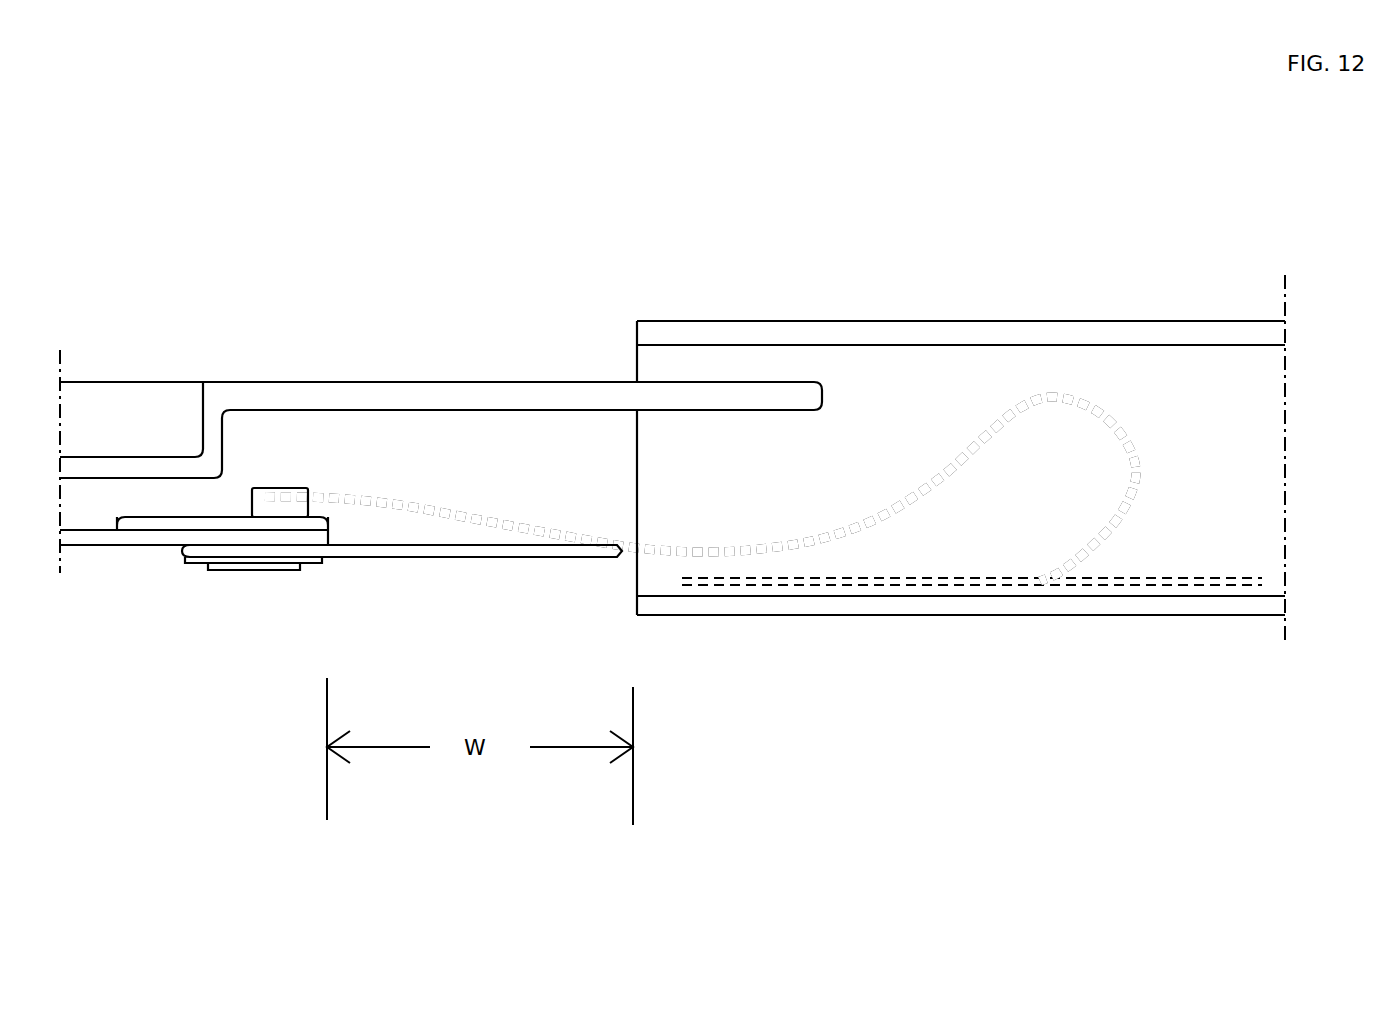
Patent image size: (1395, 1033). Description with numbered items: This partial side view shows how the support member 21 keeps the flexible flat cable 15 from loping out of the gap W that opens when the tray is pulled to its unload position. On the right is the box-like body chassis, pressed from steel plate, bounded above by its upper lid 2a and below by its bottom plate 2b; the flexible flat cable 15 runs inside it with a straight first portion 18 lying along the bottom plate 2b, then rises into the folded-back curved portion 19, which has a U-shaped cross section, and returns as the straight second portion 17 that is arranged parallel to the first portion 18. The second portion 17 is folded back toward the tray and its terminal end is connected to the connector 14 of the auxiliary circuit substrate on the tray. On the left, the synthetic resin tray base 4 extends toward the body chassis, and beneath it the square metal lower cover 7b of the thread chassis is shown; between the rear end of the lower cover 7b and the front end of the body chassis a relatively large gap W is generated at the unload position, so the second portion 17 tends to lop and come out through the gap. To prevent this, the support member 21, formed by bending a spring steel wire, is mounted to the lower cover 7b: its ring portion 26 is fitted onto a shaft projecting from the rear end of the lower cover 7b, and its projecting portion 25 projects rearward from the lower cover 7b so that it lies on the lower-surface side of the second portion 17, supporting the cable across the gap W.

The upper lid 2a is at (909, 320).
The bottom plate 2b is at (1035, 604).
The tray base 4 is at (396, 381).
The lower cover 7b is at (120, 537).
The connector 14 is at (258, 488).
The flexible flat cable 15 is at (1148, 458).
The second portion 17 is at (822, 537).
The first portion 18 is at (1192, 590).
The folded-back curved portion 19 is at (1108, 392).
The support member 21 is at (347, 585).
The projecting portion 25 is at (475, 557).
The ring portion 26 is at (183, 562).